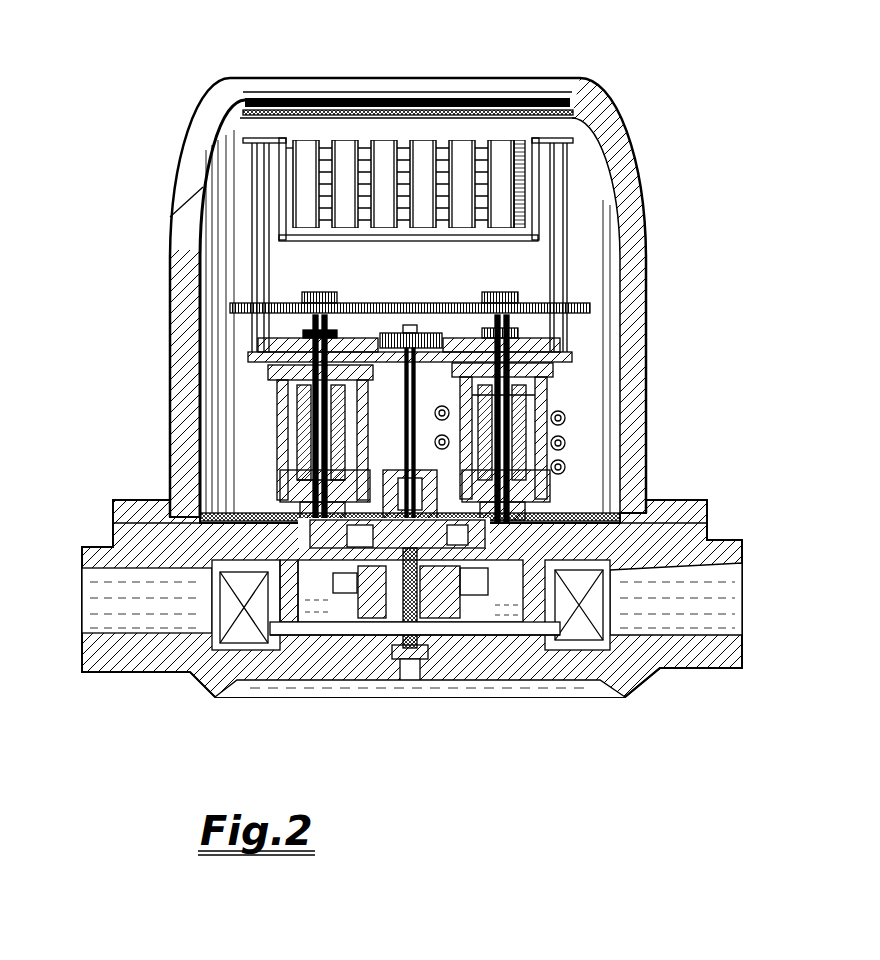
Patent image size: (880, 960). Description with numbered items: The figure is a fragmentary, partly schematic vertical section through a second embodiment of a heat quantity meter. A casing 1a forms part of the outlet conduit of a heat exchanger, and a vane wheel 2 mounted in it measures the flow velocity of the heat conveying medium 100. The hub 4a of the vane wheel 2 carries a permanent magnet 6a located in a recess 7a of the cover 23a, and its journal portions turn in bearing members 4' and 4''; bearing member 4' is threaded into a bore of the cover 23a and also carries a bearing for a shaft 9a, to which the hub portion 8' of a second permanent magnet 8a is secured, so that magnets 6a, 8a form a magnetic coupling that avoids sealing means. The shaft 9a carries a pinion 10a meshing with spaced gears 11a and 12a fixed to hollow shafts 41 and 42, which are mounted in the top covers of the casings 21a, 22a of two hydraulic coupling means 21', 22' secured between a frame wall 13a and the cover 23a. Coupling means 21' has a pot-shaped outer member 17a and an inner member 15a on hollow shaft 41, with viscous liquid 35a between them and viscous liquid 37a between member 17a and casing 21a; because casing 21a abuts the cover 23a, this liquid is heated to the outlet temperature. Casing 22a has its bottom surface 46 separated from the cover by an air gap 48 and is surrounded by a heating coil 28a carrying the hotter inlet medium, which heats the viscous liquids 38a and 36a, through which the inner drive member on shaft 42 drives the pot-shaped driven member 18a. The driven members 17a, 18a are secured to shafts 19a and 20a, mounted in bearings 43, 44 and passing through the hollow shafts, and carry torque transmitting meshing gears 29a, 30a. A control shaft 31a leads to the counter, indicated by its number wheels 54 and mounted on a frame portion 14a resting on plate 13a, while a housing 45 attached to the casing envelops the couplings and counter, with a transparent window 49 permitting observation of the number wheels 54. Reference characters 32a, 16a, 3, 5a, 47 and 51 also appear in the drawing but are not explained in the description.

The number wheels 54 is at (374, 136).
The transparent window 49 is at (482, 112).
The housing 45 is at (606, 133).
The frame portion 14a is at (558, 193).
The counter frame 32a is at (495, 252).
The torque transmitting meshing gear 30a is at (578, 297).
The shaft 20a is at (523, 333).
The casing 22a is at (557, 360).
The hydraulic coupling means 22' is at (576, 420).
The hollow shaft 42 is at (564, 393).
The heating coil 28a is at (530, 407).
The viscous liquid 38a is at (566, 418).
The balls 16a is at (566, 443).
The outer cylindrical pot-shaped driven member 18a is at (552, 478).
The bearing 44 is at (707, 508).
The bottom surface 46 is at (612, 580).
The air gap 48 is at (650, 675).
The body 3 is at (597, 660).
The recess 7a is at (560, 640).
The vane wheel 2 is at (530, 622).
The casing 1a is at (505, 650).
The bottom plate 5a is at (433, 677).
The hub 4a is at (410, 688).
The bearing member 4'' is at (402, 692).
The bearing member 4' is at (394, 661).
The permanent magnet 6a is at (348, 600).
The permanent magnet 8a is at (290, 605).
The casing 21a is at (240, 640).
The heat conveying medium 100 is at (192, 667).
The recess 47 is at (192, 667).
The flange 51 is at (132, 665).
The bearing 43 is at (205, 577).
The cover 23a is at (112, 547).
The pot-shaped cylindrical outer member 17a is at (335, 445).
The cylindrical inner member 15a is at (330, 425).
The hollow shaft 41 is at (310, 390).
The hydraulic coupling means 21' is at (246, 390).
The frame wall 13a is at (305, 357).
The shaft 19a is at (300, 333).
The torque transmitting meshing gear 29a is at (235, 297).
The control shaft 31a is at (305, 290).
The gear 11a is at (352, 335).
The pinion 10a is at (400, 328).
The gear 12a is at (463, 335).
The viscous liquid 35a is at (365, 437).
The viscous liquid 37a is at (357, 455).
The viscous liquid 36a is at (436, 417).
The shaft 9a is at (413, 486).
The hub portion 8' is at (420, 435).